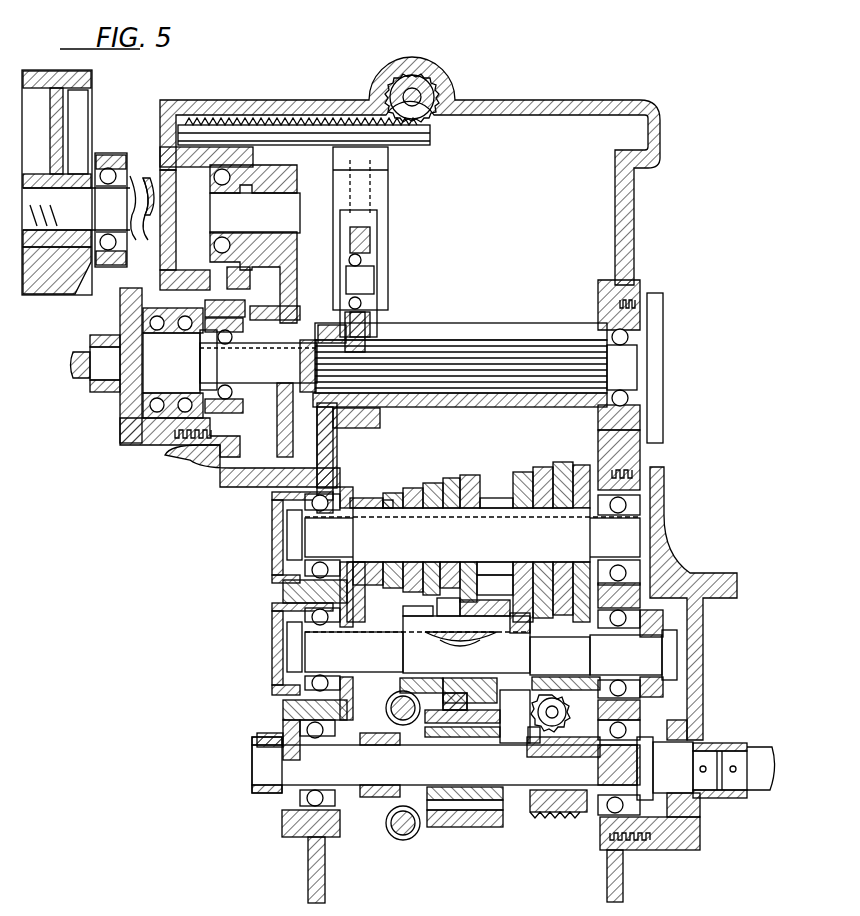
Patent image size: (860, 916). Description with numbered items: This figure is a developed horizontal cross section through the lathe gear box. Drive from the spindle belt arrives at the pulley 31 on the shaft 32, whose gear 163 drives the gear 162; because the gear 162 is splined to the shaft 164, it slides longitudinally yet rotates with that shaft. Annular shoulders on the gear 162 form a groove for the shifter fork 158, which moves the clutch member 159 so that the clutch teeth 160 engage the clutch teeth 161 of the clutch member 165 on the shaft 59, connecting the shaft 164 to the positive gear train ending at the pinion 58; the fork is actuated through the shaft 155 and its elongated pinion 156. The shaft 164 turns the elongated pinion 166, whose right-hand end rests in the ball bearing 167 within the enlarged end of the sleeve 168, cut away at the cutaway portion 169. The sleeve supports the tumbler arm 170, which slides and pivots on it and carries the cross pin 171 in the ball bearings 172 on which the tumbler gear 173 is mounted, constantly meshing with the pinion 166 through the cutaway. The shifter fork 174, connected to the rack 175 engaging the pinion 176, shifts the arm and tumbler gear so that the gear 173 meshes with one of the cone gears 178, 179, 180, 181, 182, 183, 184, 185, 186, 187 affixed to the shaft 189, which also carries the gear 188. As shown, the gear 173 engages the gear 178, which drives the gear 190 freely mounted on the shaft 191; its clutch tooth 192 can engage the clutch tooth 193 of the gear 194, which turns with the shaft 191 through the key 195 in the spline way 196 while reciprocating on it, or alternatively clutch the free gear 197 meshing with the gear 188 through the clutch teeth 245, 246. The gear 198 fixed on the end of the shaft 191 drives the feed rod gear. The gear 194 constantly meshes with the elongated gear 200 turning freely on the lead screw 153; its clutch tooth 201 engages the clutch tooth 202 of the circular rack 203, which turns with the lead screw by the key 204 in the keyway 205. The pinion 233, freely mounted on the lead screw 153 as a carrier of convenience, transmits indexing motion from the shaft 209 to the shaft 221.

The pulley 31 is at (68, 72).
The shaft 32 is at (136, 188).
The pinion 58 is at (118, 426).
The shaft 59 is at (175, 372).
The lead screw 153 is at (370, 775).
The shaft 155 is at (540, 702).
The elongated pinion 156 is at (538, 722).
The shifter fork 158 is at (325, 330).
The clutch member 159 is at (322, 318).
The clutch teeth 160 is at (265, 327).
The clutch teeth 161 is at (237, 365).
The gear 162 is at (285, 445).
The gear 163 is at (297, 158).
The shaft 164 is at (258, 363).
The clutch member 165 is at (232, 325).
The elongated pinion 166 is at (448, 345).
The ball bearing 167 is at (655, 378).
The sleeve 168 is at (560, 410).
The cutaway portion 169 is at (498, 333).
The tumbler arm 170 is at (378, 420).
The cross pin 171 is at (372, 277).
The ball bearings 172 is at (360, 259).
The tumbler gear 173 is at (372, 318).
The shifter fork 174 is at (388, 192).
The rack 175 is at (430, 129).
The pinion 176 is at (426, 95).
The cone gear 178 is at (358, 496).
The cone gear 179 is at (388, 500).
The cone gear 180 is at (398, 493).
The cone gear 181 is at (418, 487).
The cone gear 182 is at (438, 480).
The cone gear 183 is at (458, 480).
The cone gear 184 is at (472, 490).
The cone gear 185 is at (524, 472).
The cone gear 186 is at (550, 463).
The cone gear 187 is at (585, 460).
The gear 188 is at (588, 455).
The shaft 189 is at (470, 545).
The gear 190 is at (362, 590).
The shaft 191 is at (446, 665).
The clutch tooth 192 is at (417, 610).
The clutch tooth 193 is at (445, 610).
The gear 194 is at (490, 615).
The key 195 is at (462, 645).
The spline way 196 is at (490, 662).
The gear 197 is at (555, 648).
The gear 198 is at (633, 653).
The elongated gear 200 is at (466, 830).
The clutch tooth 201 is at (510, 810).
The clutch tooth 202 is at (535, 815).
The circular rack 203 is at (568, 812).
The key 204 is at (570, 758).
The keyway 205 is at (515, 745).
The shaft 209 is at (422, 668).
The shaft 221 is at (410, 95).
The pinion 233 is at (398, 802).
The clutch teeth 245 is at (506, 612).
The clutch teeth 246 is at (505, 650).